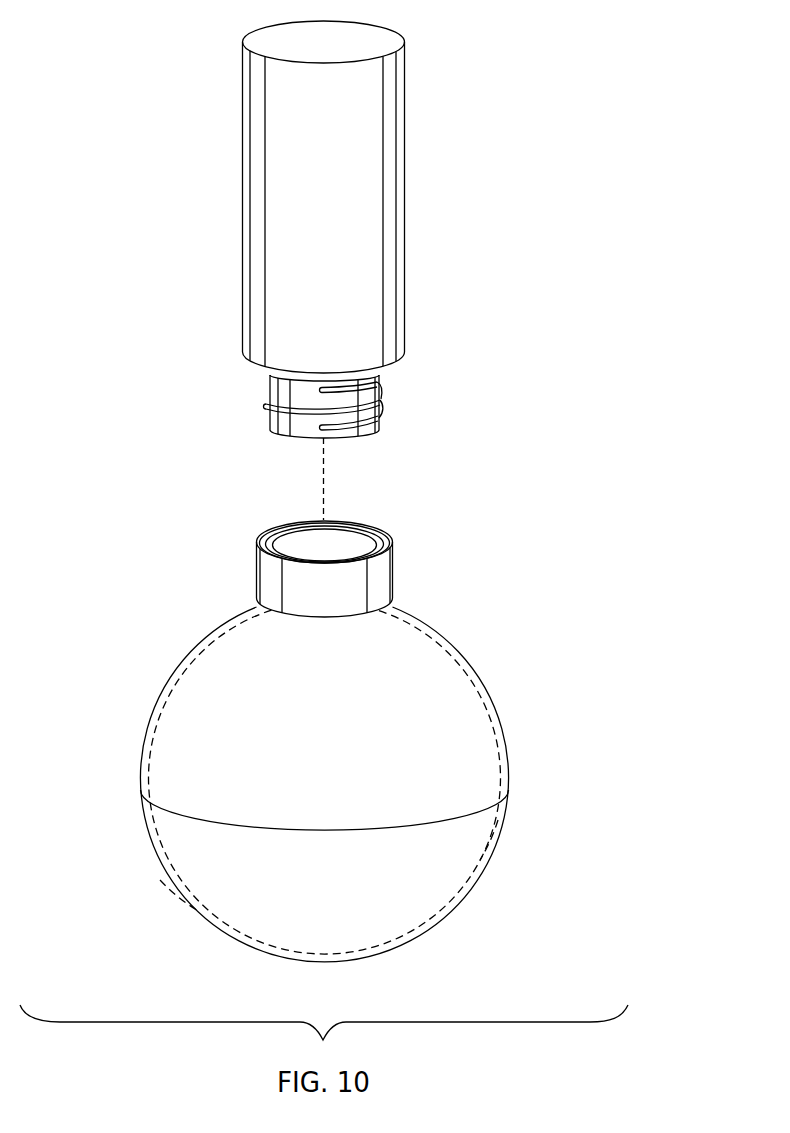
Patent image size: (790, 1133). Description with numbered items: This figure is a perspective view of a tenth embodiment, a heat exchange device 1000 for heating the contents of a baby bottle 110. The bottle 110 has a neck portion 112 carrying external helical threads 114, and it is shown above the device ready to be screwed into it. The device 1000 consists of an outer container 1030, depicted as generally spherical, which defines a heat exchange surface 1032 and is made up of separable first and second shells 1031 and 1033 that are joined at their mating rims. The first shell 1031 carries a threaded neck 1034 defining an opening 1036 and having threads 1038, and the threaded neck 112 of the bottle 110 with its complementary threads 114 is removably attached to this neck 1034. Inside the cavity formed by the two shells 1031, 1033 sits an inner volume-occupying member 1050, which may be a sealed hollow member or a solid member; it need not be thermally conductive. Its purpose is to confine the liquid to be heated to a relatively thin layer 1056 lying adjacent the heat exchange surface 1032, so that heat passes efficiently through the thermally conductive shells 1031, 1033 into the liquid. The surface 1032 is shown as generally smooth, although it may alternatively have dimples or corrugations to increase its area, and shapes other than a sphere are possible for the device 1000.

The heat exchange device 1000 is at (586, 256).
The bottle 110 is at (404, 211).
The neck portion 112 is at (382, 392).
The external helical threads 114 is at (268, 390).
The outer container 1030 is at (323, 733).
The first shell 1031 is at (150, 710).
The heat exchange surface 1032 is at (212, 660).
The second shell 1033 is at (141, 815).
The threaded neck 1034 is at (256, 582).
The opening 1036 is at (268, 532).
The threads 1038 is at (382, 535).
The inner volume-occupying member 1050 is at (187, 893).
The thin layer 1056 is at (495, 842).